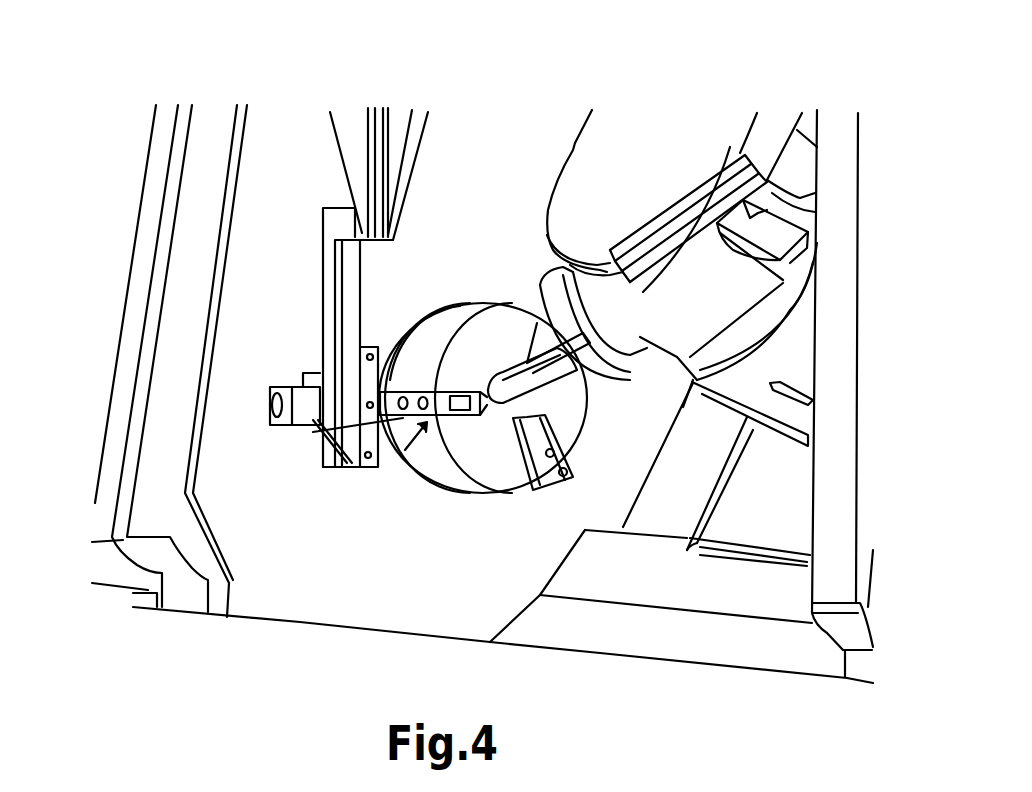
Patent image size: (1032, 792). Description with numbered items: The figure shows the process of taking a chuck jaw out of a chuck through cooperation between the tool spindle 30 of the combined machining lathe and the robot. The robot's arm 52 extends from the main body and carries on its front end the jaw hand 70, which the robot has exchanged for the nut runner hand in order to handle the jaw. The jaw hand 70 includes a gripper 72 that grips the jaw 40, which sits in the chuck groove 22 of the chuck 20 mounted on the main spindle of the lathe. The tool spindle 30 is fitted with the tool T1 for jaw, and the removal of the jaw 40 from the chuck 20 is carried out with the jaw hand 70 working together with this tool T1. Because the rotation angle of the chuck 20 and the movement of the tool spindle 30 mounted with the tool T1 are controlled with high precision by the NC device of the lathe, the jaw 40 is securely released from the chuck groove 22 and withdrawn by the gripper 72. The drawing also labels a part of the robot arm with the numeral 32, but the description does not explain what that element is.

The chuck 20 is at (490, 337).
The chuck groove 22 is at (441, 405).
The tool spindle 30 is at (713, 283).
The robot arm 32 is at (618, 163).
The jaw 40 is at (390, 452).
The arm 52 is at (193, 223).
The jaw hand 70 is at (310, 455).
The gripper 72 is at (378, 467).
The tool for jaw T1 is at (522, 490).